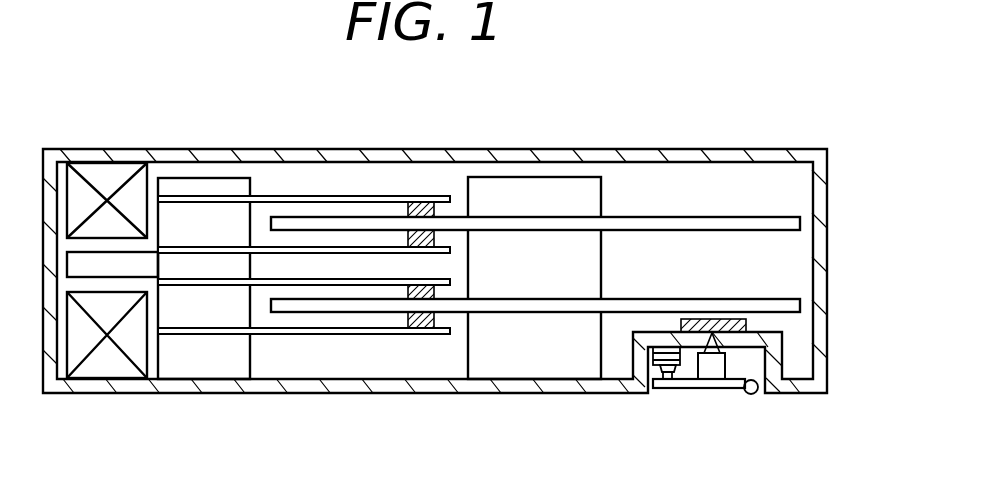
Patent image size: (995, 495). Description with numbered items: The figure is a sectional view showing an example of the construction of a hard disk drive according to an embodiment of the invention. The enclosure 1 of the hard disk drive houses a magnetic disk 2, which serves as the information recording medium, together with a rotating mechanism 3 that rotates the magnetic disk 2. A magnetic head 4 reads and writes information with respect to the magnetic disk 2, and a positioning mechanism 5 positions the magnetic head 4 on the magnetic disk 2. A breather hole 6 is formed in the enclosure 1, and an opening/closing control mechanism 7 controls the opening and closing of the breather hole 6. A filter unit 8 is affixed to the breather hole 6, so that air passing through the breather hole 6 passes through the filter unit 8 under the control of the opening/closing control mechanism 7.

The enclosure 1 is at (470, 152).
The magnetic disk 2 is at (715, 222).
The rotating mechanism 3 is at (558, 358).
The magnetic head 4 is at (418, 200).
The positioning mechanism 5 is at (208, 215).
The breather hole 6 is at (717, 332).
The opening/closing control mechanism 7 is at (715, 388).
The filter unit 8 is at (693, 319).